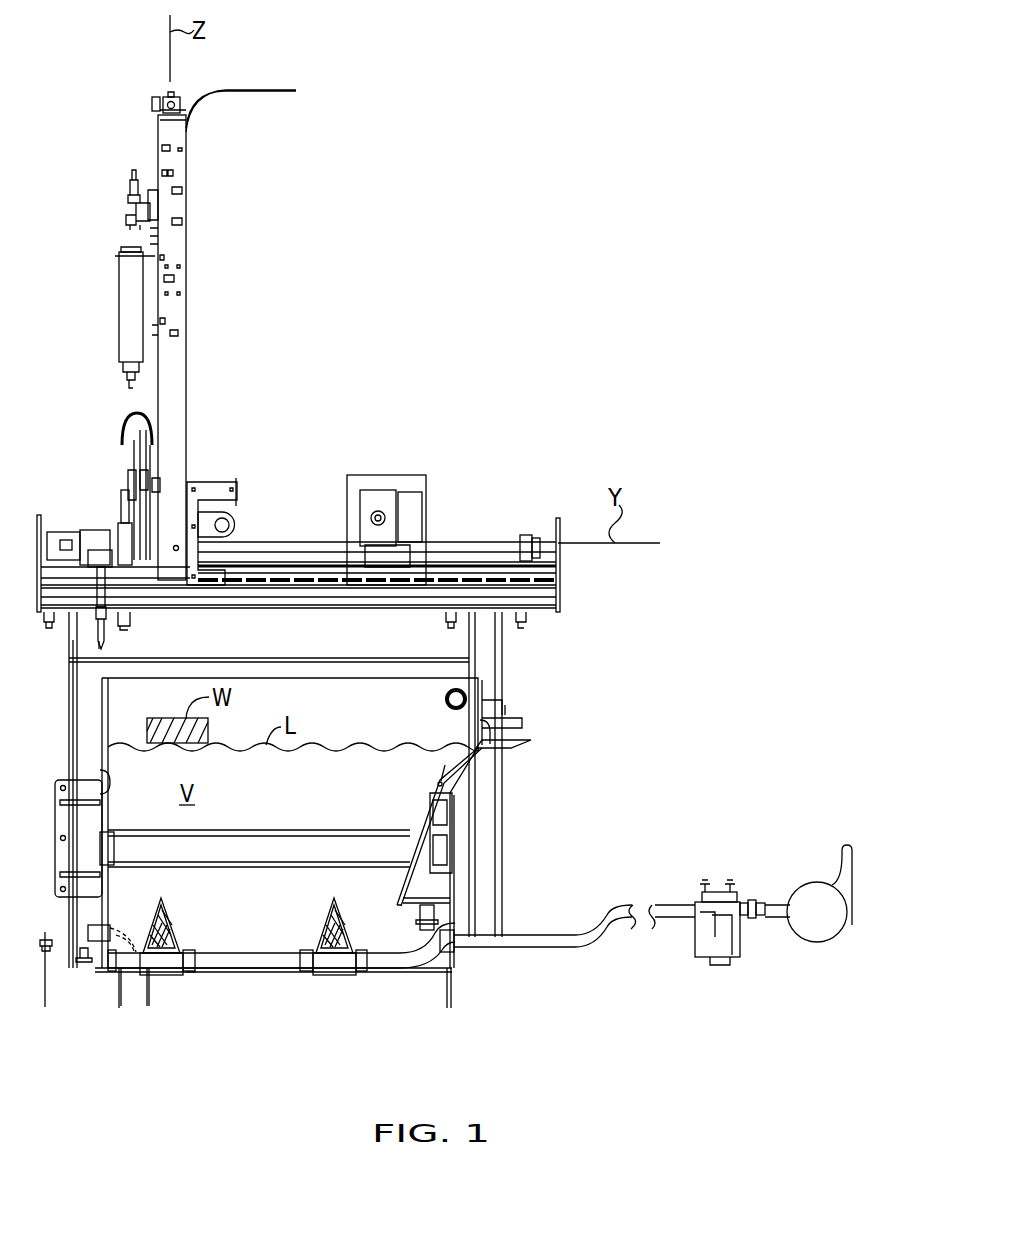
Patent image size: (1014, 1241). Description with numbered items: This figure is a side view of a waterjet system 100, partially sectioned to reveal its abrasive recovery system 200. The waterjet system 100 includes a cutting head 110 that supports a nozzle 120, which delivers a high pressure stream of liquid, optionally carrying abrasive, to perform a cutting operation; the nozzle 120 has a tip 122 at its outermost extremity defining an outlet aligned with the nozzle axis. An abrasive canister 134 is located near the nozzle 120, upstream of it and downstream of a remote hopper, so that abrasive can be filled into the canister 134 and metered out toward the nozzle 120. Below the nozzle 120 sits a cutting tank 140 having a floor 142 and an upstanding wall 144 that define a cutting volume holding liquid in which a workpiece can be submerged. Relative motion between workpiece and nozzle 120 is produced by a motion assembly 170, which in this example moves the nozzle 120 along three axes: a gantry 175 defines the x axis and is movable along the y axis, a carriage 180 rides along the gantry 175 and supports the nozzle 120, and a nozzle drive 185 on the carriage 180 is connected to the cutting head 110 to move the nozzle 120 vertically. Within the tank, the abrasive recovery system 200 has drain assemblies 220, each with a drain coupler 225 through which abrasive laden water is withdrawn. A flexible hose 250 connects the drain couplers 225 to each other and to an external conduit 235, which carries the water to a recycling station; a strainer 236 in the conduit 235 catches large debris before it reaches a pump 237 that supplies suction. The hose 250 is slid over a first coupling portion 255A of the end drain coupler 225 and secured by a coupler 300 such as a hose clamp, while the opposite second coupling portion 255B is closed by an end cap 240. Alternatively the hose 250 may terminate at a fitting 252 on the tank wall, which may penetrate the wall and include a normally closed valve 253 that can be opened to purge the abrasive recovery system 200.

The waterjet system 100 is at (363, 213).
The cutting head 110 is at (118, 535).
The nozzle 120 is at (112, 640).
The tip 122 is at (97, 648).
The abrasive canister 134 is at (119, 293).
The cutting tank 140 is at (100, 736).
The floor 142 is at (450, 973).
The upstanding wall 144 is at (100, 793).
The motion assembly 170 is at (501, 545).
The gantry 175 is at (212, 492).
The carriage 180 is at (177, 320).
The nozzle drive 185 is at (65, 532).
The abrasive recovery system 200 is at (319, 890).
The drain assembly 220 is at (181, 942).
The drain coupler 225 is at (162, 977).
The conduit 235 is at (531, 950).
The strainer 236 is at (706, 940).
The pump 237 is at (825, 925).
The end cap 240 is at (120, 963).
The flexible hose 250 is at (221, 965).
The fitting 252 is at (88, 930).
The valve 253 is at (102, 930).
The first coupling portion 255A is at (187, 974).
The second coupling portion 255B is at (135, 952).
The coupler 300 is at (198, 957).